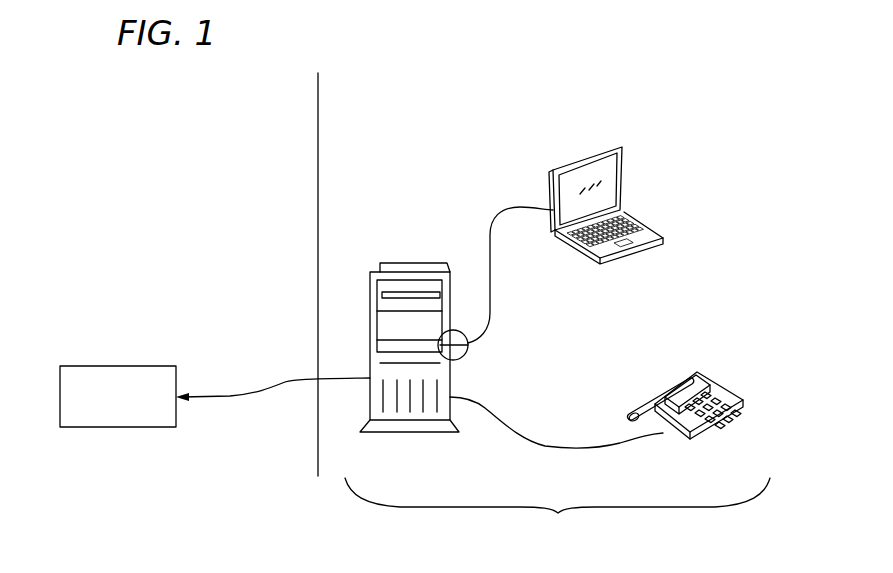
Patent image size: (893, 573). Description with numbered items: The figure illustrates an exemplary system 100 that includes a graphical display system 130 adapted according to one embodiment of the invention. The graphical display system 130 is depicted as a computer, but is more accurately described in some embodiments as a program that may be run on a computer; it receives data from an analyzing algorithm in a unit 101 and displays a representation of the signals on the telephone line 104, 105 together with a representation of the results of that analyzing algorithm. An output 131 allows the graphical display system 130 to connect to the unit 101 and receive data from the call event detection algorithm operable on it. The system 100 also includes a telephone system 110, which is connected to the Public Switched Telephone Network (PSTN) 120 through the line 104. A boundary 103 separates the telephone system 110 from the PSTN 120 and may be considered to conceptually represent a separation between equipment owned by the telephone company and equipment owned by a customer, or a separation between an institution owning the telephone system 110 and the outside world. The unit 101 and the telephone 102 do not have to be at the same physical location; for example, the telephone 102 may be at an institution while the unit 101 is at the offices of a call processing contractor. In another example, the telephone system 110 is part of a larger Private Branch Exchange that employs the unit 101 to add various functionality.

The system 100 is at (694, 107).
The unit 101 is at (390, 264).
The telephone 102 is at (707, 371).
The boundary 103 is at (318, 98).
The line 104 is at (237, 395).
The telephone line 105 is at (533, 438).
The telephone system 110 is at (557, 514).
The Public Switched Telephone Network (PSTN) 120 is at (123, 366).
The graphical display system 130 is at (623, 163).
The output 131 is at (462, 357).